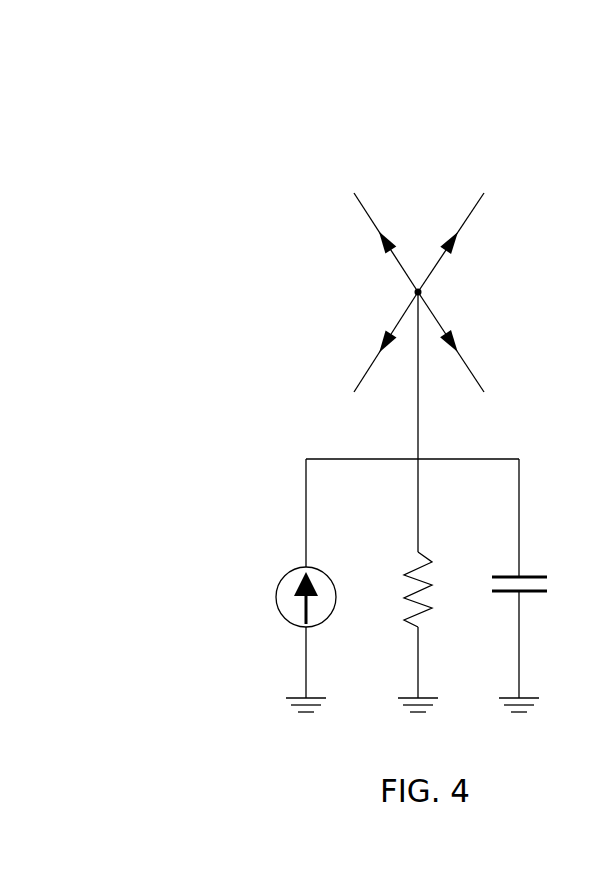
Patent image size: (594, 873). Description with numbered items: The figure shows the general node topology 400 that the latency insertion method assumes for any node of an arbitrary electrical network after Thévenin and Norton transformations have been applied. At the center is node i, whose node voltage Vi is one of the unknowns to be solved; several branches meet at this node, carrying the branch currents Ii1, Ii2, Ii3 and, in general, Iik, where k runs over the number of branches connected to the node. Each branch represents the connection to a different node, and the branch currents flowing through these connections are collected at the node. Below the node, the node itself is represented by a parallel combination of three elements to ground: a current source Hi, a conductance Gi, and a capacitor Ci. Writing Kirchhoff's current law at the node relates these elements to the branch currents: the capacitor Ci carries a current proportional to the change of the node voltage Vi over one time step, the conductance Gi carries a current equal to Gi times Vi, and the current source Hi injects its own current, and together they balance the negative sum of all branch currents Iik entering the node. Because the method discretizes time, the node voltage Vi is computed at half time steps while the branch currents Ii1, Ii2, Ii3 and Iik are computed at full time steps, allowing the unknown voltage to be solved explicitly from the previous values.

The node topology 400 is at (68, 74).
The node voltage Vi is at (439, 293).
The branch current Ii1 is at (468, 349).
The branch current Ii2 is at (468, 237).
The branch current Ii3 is at (371, 237).
The branch current Iik is at (371, 349).
The current source Hi is at (287, 585).
The conductance Gi is at (402, 585).
The capacitor Ci is at (508, 585).